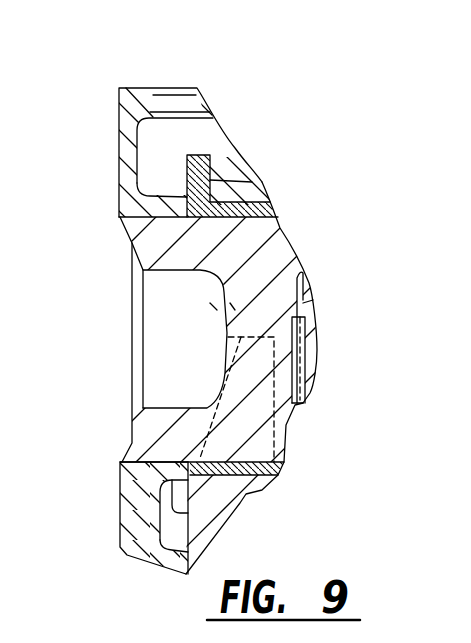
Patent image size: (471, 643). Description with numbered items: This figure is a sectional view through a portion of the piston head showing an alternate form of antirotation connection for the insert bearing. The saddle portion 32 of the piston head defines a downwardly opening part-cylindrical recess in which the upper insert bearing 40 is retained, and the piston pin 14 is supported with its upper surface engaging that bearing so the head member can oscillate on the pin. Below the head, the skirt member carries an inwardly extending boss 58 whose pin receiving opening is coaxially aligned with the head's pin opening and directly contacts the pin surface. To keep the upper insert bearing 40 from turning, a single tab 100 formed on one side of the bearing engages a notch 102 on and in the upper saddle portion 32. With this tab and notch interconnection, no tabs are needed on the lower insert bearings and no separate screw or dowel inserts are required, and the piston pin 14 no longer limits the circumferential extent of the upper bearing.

The piston pin 14 is at (213, 324).
The saddle portion 32 is at (252, 182).
The insert bearing 40 is at (277, 207).
The boss 58 is at (140, 496).
The tab 100 is at (137, 196).
The notch 102 is at (243, 161).